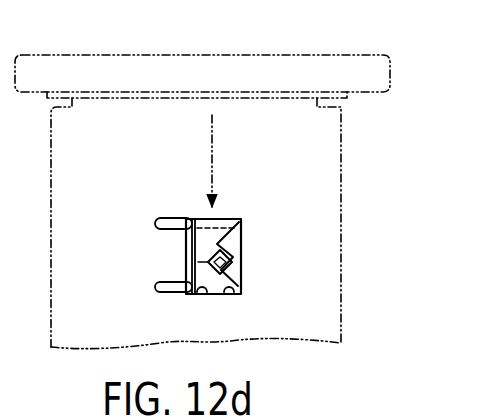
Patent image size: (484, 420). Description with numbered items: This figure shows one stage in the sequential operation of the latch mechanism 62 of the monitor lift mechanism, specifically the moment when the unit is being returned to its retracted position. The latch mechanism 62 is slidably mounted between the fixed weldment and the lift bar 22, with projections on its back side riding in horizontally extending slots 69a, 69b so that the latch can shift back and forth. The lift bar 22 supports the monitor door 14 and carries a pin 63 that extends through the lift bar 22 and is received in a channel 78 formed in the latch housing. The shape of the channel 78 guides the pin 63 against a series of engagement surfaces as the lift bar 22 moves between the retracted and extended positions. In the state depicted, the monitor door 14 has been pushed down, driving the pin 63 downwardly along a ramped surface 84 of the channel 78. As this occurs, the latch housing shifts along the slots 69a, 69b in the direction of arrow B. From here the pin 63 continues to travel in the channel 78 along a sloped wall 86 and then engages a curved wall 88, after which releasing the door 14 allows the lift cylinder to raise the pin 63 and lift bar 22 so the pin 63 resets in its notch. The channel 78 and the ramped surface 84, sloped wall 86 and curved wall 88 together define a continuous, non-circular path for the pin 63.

The monitor door 14 is at (336, 70).
The lift bar 22 is at (330, 182).
The latch mechanism 62 is at (280, 259).
The channel 78 is at (243, 240).
The ramped surface 84 is at (210, 250).
The pin 63 is at (190, 272).
The horizontally extending slot 69a is at (164, 223).
The horizontally extending slot 69b is at (170, 291).
The sloped wall 86 is at (199, 288).
The curved wall 88 is at (222, 293).
The arrow B is at (179, 255).